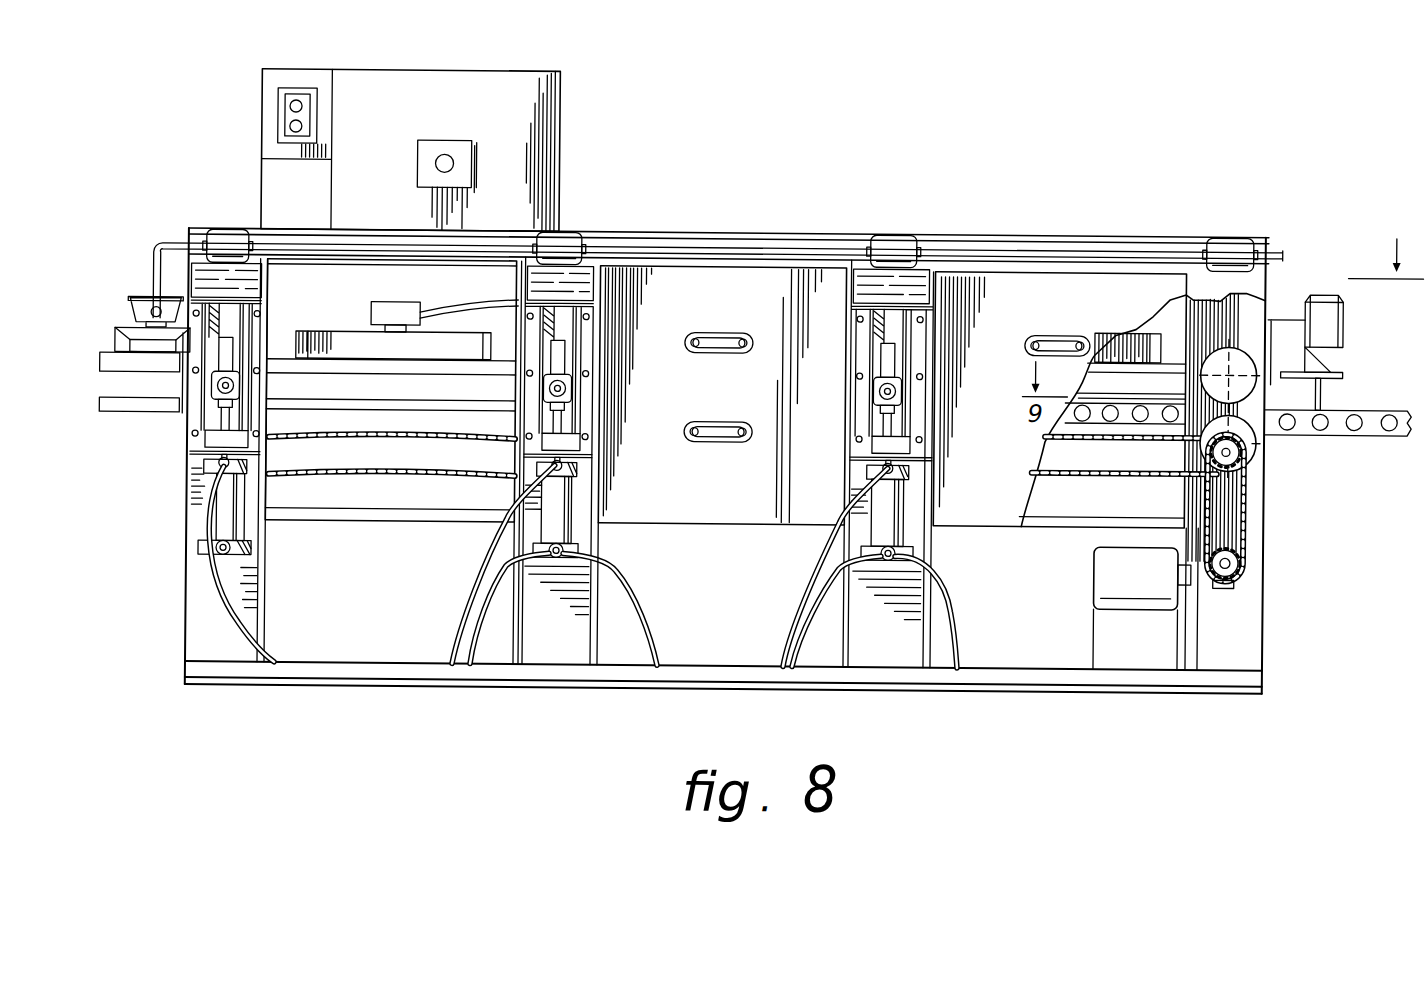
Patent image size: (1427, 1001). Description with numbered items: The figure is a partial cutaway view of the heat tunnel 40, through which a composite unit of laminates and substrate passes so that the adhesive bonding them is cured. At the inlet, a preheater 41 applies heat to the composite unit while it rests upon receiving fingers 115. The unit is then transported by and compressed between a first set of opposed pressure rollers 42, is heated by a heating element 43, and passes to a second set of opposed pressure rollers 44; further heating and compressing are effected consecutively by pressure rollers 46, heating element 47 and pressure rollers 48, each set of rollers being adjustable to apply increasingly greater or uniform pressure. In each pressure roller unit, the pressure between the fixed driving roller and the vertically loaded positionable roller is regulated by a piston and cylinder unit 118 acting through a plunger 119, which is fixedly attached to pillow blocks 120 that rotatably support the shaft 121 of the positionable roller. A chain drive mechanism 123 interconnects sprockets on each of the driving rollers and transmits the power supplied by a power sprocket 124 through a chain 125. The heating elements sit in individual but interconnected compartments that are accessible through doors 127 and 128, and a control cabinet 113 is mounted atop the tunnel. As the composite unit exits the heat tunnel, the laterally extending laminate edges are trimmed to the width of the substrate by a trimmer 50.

The heat tunnel 40 is at (545, 740).
The preheater 41 is at (113, 333).
The first set of opposed pressure rollers 42 is at (233, 297).
The heating element 43 is at (327, 329).
The second set of opposed pressure rollers 44 is at (568, 295).
The pressure rollers 46 is at (903, 289).
The heating element 47 is at (1155, 320).
The pressure rollers 48 is at (1238, 324).
The trimmer 50 is at (1343, 327).
The control cabinet 113 is at (556, 146).
The receiving fingers 115 is at (97, 413).
The piston and cylinder unit 118 is at (243, 527).
The plunger 119 is at (203, 455).
The pillow blocks 120 is at (215, 364).
The shaft 121 is at (213, 387).
The chain drive mechanism 123 is at (1078, 472).
The power sprocket 124 is at (1233, 538).
The chain 125 is at (1243, 497).
The door 127 is at (667, 283).
The door 128 is at (737, 273).